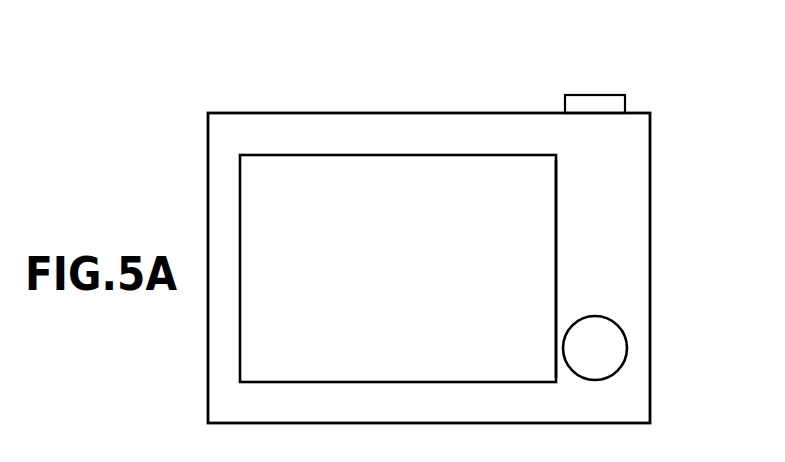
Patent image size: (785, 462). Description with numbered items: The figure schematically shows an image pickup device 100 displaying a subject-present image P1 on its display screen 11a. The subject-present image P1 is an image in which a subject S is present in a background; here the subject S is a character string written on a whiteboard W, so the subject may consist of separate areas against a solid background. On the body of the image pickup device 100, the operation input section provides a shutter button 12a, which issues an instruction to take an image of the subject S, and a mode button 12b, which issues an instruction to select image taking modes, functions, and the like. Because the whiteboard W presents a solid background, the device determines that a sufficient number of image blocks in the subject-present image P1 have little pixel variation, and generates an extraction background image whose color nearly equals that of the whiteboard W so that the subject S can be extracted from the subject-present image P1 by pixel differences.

The image pickup device 100 is at (338, 90).
The shutter button 12a is at (594, 93).
The mode button 12b is at (622, 330).
The subject-present image P1 is at (572, 198).
The display screen 11a is at (556, 255).
The whiteboard W is at (270, 223).
The subject S is at (390, 238).